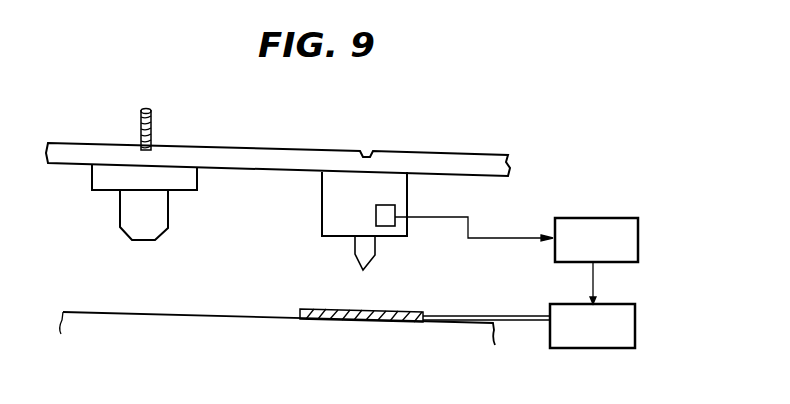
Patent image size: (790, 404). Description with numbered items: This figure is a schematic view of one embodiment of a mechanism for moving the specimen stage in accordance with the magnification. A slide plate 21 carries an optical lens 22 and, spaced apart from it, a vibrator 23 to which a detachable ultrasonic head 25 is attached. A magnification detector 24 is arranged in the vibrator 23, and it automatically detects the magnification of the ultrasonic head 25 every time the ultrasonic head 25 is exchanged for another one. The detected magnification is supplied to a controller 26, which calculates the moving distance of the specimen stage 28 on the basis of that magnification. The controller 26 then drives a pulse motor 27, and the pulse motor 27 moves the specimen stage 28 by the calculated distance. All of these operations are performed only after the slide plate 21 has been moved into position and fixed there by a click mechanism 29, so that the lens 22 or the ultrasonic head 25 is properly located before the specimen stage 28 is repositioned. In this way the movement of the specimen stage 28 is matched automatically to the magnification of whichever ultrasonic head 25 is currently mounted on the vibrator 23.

The slide plate 21 is at (472, 162).
The optical lens 22 is at (158, 218).
The vibrator 23 is at (398, 190).
The magnification detector 24 is at (395, 225).
The ultrasonic head 25 is at (367, 253).
The controller 26 is at (598, 218).
The pulse motor 27 is at (617, 304).
The specimen stage 28 is at (413, 312).
The click mechanism 29 is at (152, 125).